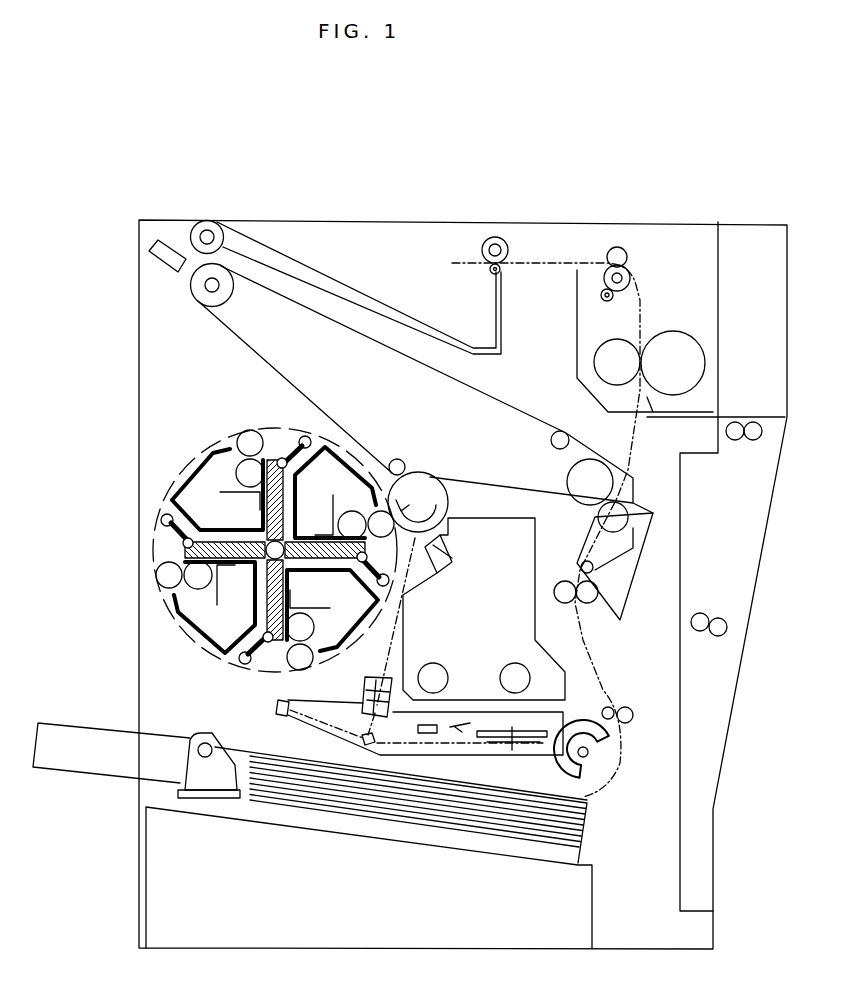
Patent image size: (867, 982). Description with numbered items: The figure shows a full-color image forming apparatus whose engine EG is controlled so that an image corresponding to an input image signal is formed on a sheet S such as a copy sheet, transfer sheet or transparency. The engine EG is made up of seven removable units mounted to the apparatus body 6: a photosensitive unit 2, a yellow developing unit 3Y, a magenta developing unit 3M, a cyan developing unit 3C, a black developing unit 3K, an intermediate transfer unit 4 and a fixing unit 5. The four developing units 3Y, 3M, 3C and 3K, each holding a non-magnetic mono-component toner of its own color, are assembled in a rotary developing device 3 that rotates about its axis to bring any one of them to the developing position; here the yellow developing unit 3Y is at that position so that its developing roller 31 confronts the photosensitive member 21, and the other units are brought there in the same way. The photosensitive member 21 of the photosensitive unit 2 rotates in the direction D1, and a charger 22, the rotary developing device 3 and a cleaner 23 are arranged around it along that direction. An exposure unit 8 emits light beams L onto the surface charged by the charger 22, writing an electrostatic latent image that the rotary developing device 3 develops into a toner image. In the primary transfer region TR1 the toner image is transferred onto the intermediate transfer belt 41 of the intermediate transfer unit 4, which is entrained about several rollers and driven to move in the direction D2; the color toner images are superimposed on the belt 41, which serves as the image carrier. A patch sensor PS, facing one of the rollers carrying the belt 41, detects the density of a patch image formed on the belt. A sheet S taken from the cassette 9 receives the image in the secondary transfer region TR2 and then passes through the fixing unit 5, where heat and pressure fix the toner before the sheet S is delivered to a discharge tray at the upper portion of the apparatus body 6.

The engine EG is at (146, 412).
The patch sensor PS is at (155, 243).
The rotary developing device 3 is at (275, 531).
The developing roller 31 is at (249, 438).
The black developing unit 3K is at (247, 524).
The yellow developing unit 3Y is at (350, 487).
The cyan developing unit 3C is at (351, 597).
The magenta developing unit 3M is at (247, 629).
The intermediate transfer unit 4 is at (526, 393).
The intermediate transfer belt 41 is at (273, 363).
The moving direction D2 is at (310, 383).
The primary transfer region TR1 is at (423, 459).
The secondary transfer region TR2 is at (585, 523).
The rotation direction D1 is at (418, 502).
The photosensitive member 21 is at (440, 504).
The charger 22 is at (423, 572).
The cleaner 23 is at (522, 563).
The photosensitive unit 2 is at (563, 634).
The fixing unit 5 is at (657, 324).
The apparatus body 6 is at (140, 566).
The light beams L is at (357, 665).
The exposure unit 8 is at (275, 703).
The cassette 9 is at (83, 725).
The sheet S is at (453, 810).